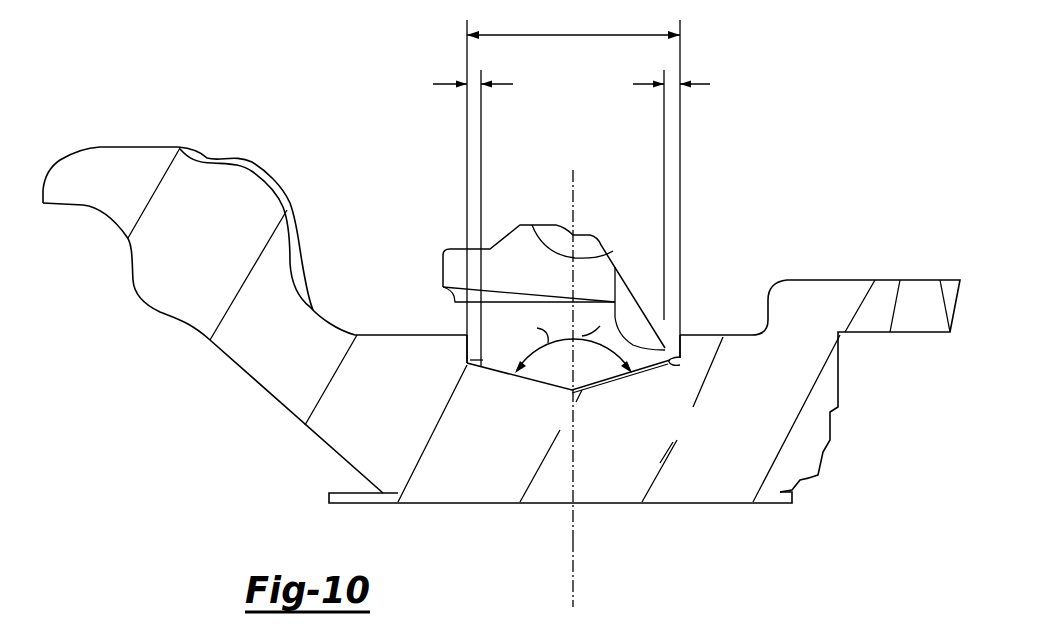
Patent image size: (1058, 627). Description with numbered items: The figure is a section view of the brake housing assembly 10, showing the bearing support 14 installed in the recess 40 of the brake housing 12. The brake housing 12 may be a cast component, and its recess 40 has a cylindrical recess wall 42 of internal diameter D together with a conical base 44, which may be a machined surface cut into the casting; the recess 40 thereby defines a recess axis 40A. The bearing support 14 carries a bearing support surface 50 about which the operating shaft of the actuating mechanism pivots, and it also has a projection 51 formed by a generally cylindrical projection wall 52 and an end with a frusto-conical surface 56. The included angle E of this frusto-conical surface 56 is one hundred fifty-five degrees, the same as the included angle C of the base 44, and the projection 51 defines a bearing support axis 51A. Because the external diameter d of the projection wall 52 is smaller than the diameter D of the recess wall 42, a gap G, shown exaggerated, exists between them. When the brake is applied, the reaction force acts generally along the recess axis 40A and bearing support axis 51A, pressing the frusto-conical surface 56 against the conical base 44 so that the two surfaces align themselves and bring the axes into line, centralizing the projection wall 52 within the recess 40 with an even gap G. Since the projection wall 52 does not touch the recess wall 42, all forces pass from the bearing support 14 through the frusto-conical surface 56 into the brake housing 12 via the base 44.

The brake housing assembly 10 is at (501, 257).
The brake housing 12 is at (838, 377).
The bearing support 14 is at (510, 238).
The recess 40 is at (679, 343).
The recess wall 42 is at (669, 367).
The base 44 is at (553, 388).
The bearing support surface 50 is at (583, 236).
The projection 51 is at (540, 367).
The projection wall 52 is at (481, 338).
The frusto-conical surface 56 is at (643, 371).
The bearing support axis 51A is at (573, 528).
The recess axis 40A is at (573, 562).